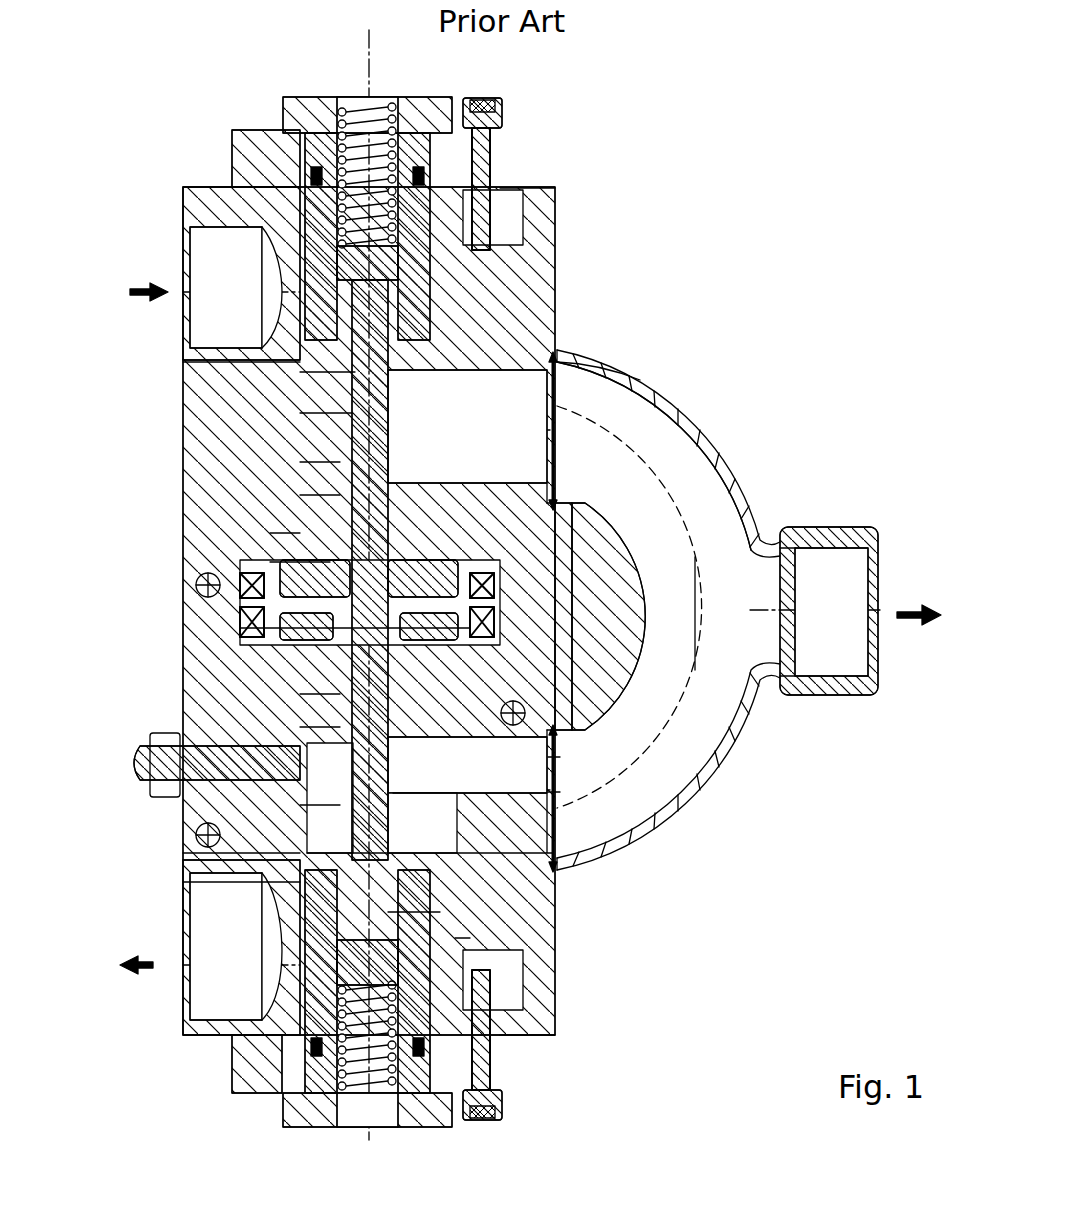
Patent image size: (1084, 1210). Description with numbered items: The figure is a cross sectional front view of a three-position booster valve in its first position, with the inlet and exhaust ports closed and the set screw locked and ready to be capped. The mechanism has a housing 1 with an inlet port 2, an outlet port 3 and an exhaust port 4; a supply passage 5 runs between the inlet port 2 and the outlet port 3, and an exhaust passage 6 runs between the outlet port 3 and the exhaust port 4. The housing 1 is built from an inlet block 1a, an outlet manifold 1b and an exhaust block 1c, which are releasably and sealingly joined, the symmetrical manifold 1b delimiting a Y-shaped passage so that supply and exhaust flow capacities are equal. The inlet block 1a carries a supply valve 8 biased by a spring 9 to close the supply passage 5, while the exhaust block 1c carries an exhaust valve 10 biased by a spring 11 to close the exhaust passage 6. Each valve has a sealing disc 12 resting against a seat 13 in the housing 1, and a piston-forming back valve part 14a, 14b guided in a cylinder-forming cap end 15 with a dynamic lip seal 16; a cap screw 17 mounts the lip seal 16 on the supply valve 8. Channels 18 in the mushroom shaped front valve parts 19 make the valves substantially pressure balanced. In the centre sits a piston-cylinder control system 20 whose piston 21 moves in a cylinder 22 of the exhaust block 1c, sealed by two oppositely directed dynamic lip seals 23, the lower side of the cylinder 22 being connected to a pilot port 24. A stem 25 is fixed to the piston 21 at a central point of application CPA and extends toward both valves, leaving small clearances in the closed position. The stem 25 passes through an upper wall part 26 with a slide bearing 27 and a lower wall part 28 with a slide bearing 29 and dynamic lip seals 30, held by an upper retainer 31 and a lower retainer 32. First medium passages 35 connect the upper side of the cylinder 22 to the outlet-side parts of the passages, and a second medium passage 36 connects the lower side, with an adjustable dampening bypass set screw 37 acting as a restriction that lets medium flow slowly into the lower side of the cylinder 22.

The housing 1 is at (567, 222).
The inlet block 1a is at (527, 187).
The outlet manifold 1b is at (680, 397).
The exhaust block 1c is at (555, 1025).
The inlet port 2 is at (139, 292).
The outlet port 3 is at (927, 615).
The exhaust port 4 is at (130, 965).
The supply passage 5 is at (597, 405).
The exhaust passage 6 is at (547, 853).
The supply valve 8 is at (560, 263).
The spring 9 is at (367, 50).
The exhaust valve 10 is at (455, 938).
The spring 11 is at (323, 1127).
The sealing disc 12 is at (300, 882).
The seat 13 is at (300, 853).
The back valve part 14a is at (183, 195).
The back valve part 14b is at (183, 1010).
The cap end 15 is at (428, 1130).
The dynamic lip seal 16 is at (283, 1090).
The cap screw 17 is at (465, 83).
The channel 18 is at (440, 912).
The front valve part 19 is at (470, 940).
The piston-cylinder control system 20 is at (480, 660).
The piston 21 is at (270, 533).
The cylinder 22 is at (330, 562).
The dynamic lip seals 23 is at (232, 612).
The central point of application CPA is at (240, 628).
The pilot port 24 is at (300, 694).
The stem 25 is at (300, 462).
The wall part 26 is at (545, 505).
The slide bearing 27 is at (300, 495).
The wall part 28 is at (548, 757).
The slide bearing 29 is at (340, 668).
The dynamic lip seals 30 is at (300, 727).
The upper retainer 31 is at (490, 640).
The lower retainer 32 is at (548, 792).
The first medium passages 35 is at (545, 457).
The second medium passage 36 is at (300, 805).
The dampening bypass set screw 37 is at (128, 760).